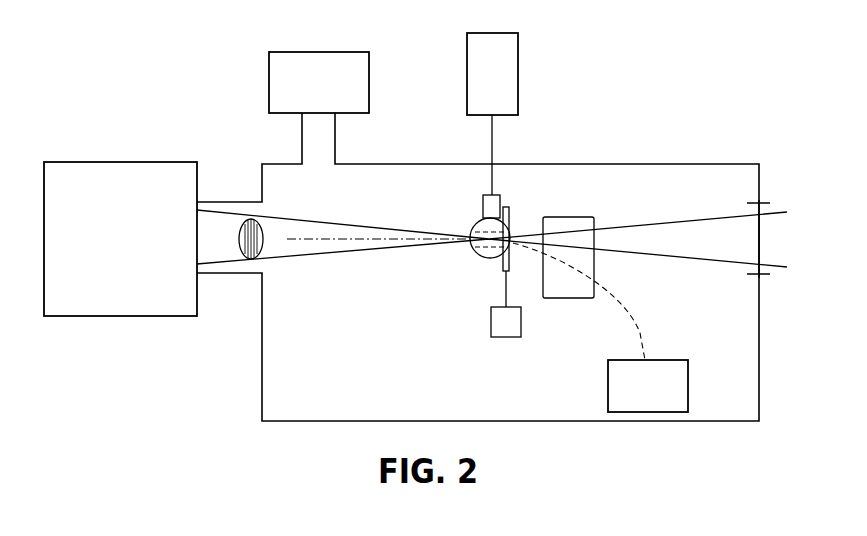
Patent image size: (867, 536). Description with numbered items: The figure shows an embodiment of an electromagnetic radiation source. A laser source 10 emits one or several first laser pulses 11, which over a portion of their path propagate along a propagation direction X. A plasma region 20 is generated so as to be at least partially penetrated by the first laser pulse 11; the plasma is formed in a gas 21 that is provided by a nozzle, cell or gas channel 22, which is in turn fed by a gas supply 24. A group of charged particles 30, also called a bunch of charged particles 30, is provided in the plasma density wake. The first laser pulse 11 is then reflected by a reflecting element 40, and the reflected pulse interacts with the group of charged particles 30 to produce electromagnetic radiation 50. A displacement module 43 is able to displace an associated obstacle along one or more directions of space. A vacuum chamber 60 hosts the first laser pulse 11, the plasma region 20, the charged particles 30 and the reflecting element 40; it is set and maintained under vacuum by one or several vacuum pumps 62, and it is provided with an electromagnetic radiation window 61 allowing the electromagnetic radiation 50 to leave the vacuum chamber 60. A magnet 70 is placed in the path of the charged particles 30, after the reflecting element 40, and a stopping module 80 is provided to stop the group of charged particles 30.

The laser source 10 is at (175, 318).
The first laser pulse 11 is at (250, 260).
The plasma region 20 is at (477, 252).
The gas 21 is at (490, 259).
The nozzle 22 is at (483, 209).
The gas supply 24 is at (518, 43).
The group of charged particles 30 is at (640, 333).
The reflecting element 40 is at (512, 213).
The displacement module 43 is at (498, 338).
The electromagnetic radiation 50 is at (665, 230).
The vacuum chamber 60 is at (298, 422).
The electromagnetic radiation window 61 is at (772, 268).
The vacuum pump 62 is at (369, 62).
The magnet 70 is at (580, 218).
The stopping module 80 is at (688, 378).
The propagation direction X is at (340, 242).